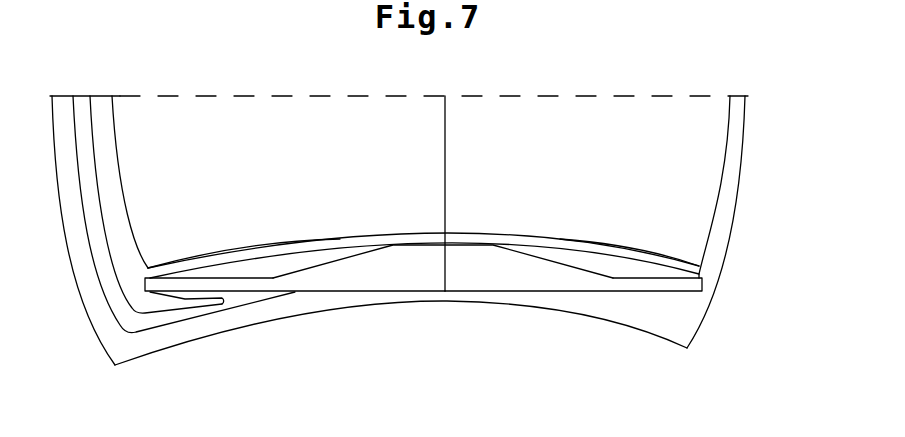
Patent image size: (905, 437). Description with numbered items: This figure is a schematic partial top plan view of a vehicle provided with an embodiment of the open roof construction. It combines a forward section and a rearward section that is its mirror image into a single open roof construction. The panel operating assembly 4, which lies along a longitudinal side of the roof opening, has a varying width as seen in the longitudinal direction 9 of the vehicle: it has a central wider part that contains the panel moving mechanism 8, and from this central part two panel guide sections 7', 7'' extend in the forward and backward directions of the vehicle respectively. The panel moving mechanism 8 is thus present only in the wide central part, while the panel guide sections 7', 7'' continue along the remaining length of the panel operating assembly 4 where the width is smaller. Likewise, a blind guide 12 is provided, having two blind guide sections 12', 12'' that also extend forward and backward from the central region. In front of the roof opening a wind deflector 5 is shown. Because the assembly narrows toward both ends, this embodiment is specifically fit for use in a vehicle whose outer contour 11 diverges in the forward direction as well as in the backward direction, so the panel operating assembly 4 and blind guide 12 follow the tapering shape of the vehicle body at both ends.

The panel operating assembly 4 is at (341, 297).
The wind deflector 5 is at (84, 103).
The panel guide section 7' is at (295, 348).
The panel guide section 7'' is at (573, 348).
The panel moving mechanism 8 is at (468, 274).
The longitudinal direction 9 is at (640, 93).
The outer contour 11 is at (170, 347).
The blind guide 12 is at (486, 226).
The blind guide section 12' is at (244, 329).
The blind guide section 12'' is at (593, 329).